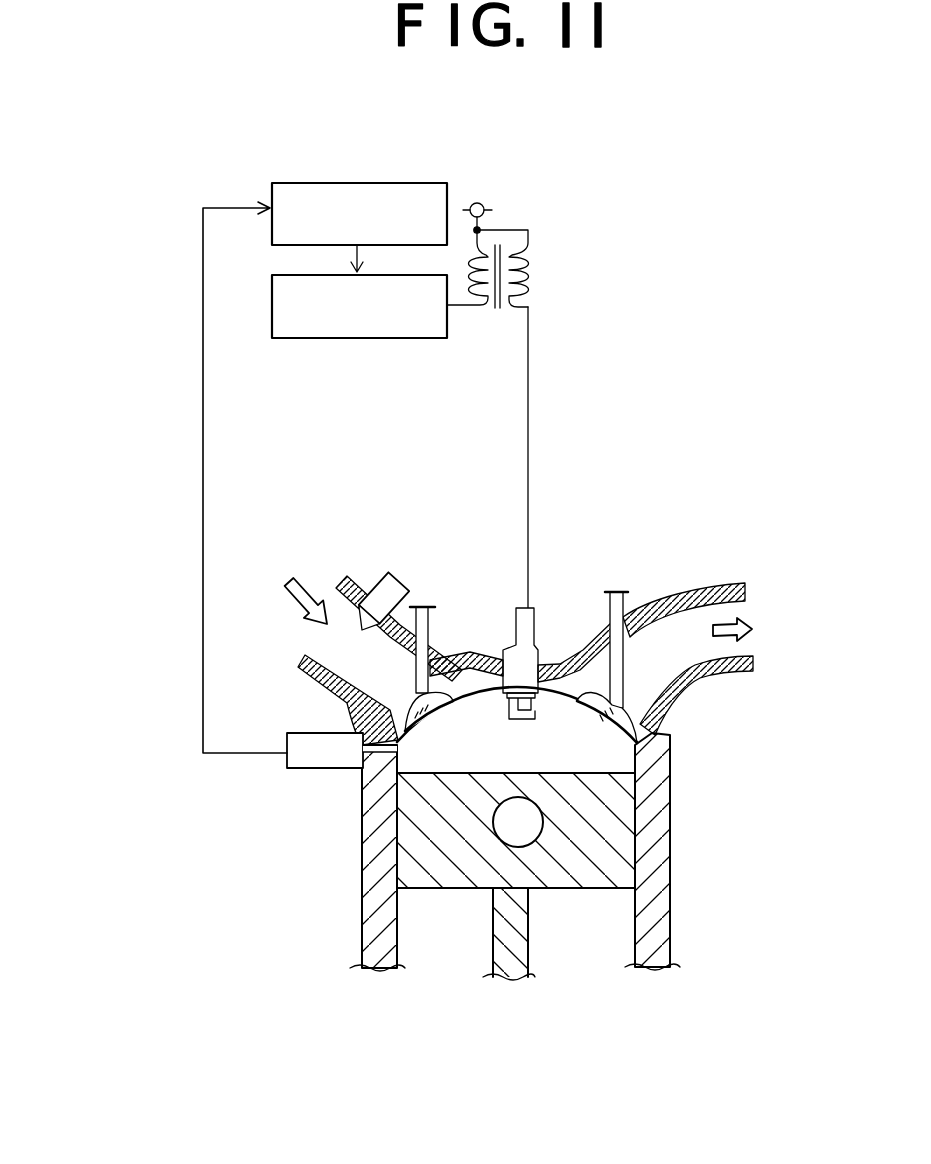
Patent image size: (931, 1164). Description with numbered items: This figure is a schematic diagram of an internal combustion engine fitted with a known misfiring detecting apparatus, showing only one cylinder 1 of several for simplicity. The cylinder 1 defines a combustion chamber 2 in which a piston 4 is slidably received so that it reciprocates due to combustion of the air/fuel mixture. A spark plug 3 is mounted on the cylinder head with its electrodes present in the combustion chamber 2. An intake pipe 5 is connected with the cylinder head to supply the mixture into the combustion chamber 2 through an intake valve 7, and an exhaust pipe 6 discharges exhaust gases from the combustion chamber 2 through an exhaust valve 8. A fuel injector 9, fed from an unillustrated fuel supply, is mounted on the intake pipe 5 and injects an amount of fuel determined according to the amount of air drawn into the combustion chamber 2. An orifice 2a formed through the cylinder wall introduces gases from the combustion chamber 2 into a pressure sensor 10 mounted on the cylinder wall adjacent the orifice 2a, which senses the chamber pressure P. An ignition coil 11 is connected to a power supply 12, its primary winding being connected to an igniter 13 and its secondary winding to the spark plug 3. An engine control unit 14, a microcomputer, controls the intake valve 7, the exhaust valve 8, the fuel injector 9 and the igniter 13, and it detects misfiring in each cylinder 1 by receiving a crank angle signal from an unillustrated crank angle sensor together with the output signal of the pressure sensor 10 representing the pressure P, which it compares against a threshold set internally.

The cylinder 1 is at (686, 810).
The combustion chamber 2 is at (365, 785).
The orifice 2a is at (375, 728).
The spark plug 3 is at (530, 633).
The piston 4 is at (613, 857).
The intake pipe 5 is at (424, 607).
The exhaust pipe 6 is at (657, 600).
The intake valve 7 is at (437, 700).
The exhaust valve 8 is at (600, 712).
The fuel injector 9 is at (392, 583).
The pressure sensor 10 is at (288, 733).
The ignition coil 11 is at (528, 278).
The power supply 12 is at (484, 204).
The igniter 13 is at (350, 338).
The engine control unit (ECU) 14 is at (360, 183).
The pressure P is at (203, 462).